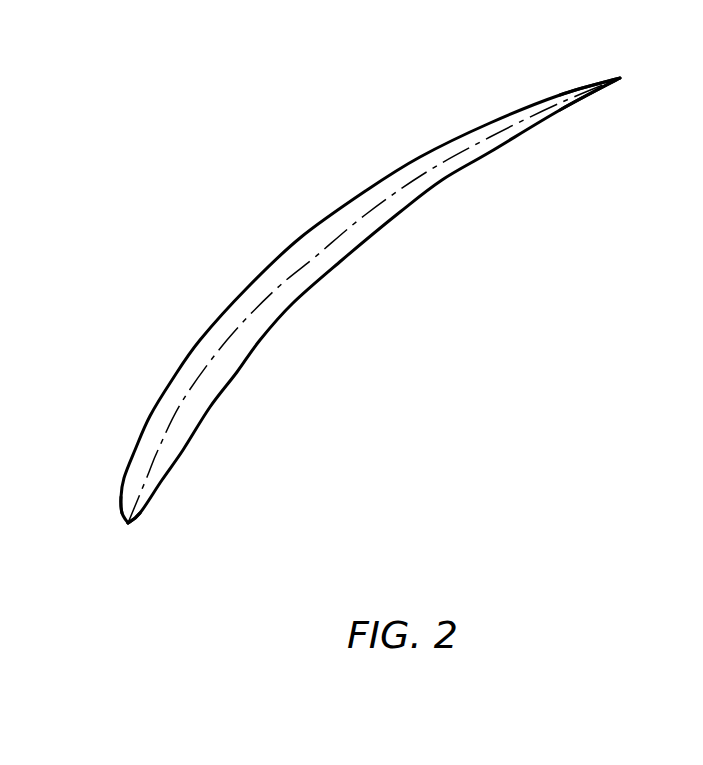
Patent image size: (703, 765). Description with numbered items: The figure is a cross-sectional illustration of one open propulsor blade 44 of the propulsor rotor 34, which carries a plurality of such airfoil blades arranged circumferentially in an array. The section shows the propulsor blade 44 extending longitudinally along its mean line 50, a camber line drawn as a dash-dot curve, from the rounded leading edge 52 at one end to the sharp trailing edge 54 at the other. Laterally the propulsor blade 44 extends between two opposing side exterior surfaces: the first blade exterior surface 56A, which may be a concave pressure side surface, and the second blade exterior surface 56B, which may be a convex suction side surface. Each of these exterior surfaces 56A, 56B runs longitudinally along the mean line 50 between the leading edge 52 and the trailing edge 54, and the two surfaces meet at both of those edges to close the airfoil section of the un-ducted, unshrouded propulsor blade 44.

The propulsor rotor 34 is at (323, 69).
The open propulsor blade 44 is at (382, 308).
The mean line 50 is at (275, 290).
The leading edge 52 is at (128, 523).
The trailing edge 54 is at (620, 78).
The first blade exterior surface 56A is at (238, 372).
The second blade exterior surface 56B is at (200, 340).